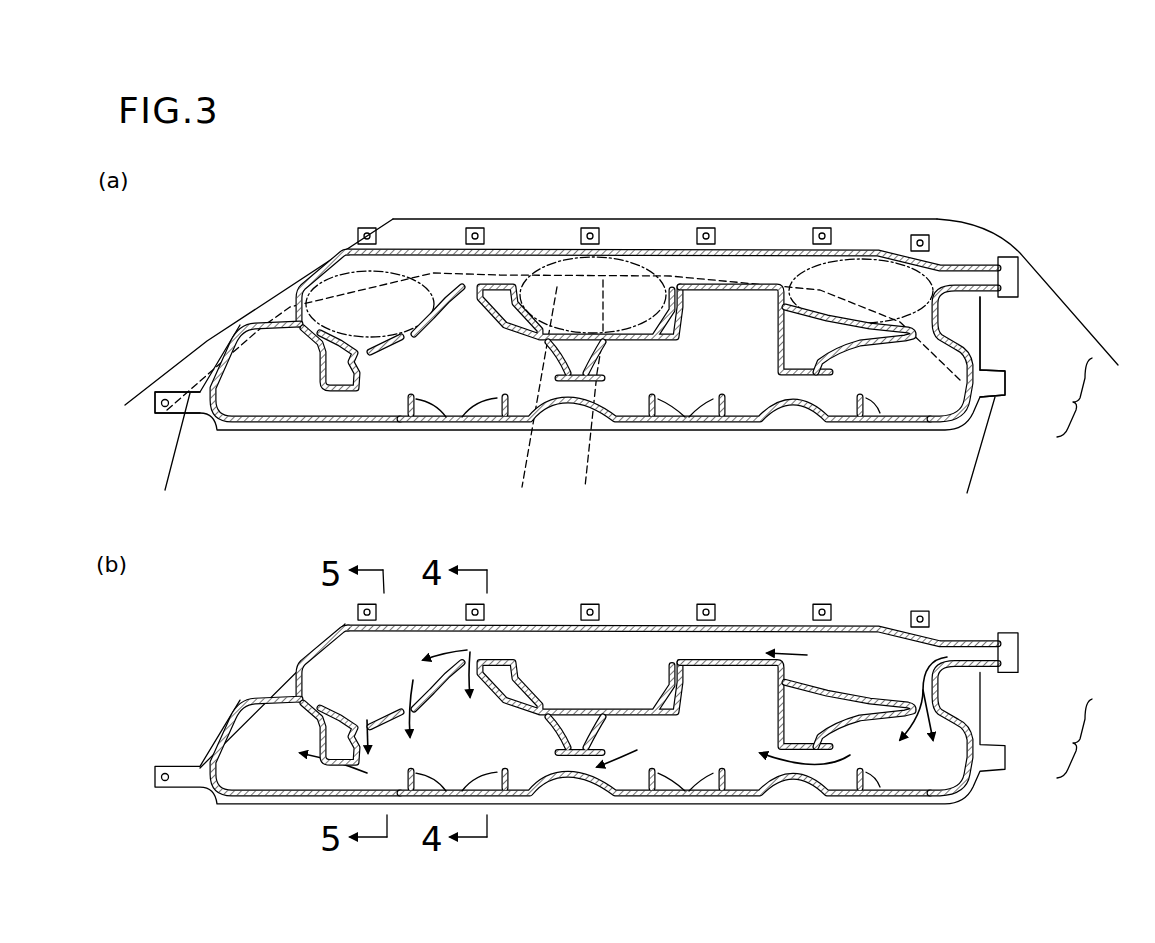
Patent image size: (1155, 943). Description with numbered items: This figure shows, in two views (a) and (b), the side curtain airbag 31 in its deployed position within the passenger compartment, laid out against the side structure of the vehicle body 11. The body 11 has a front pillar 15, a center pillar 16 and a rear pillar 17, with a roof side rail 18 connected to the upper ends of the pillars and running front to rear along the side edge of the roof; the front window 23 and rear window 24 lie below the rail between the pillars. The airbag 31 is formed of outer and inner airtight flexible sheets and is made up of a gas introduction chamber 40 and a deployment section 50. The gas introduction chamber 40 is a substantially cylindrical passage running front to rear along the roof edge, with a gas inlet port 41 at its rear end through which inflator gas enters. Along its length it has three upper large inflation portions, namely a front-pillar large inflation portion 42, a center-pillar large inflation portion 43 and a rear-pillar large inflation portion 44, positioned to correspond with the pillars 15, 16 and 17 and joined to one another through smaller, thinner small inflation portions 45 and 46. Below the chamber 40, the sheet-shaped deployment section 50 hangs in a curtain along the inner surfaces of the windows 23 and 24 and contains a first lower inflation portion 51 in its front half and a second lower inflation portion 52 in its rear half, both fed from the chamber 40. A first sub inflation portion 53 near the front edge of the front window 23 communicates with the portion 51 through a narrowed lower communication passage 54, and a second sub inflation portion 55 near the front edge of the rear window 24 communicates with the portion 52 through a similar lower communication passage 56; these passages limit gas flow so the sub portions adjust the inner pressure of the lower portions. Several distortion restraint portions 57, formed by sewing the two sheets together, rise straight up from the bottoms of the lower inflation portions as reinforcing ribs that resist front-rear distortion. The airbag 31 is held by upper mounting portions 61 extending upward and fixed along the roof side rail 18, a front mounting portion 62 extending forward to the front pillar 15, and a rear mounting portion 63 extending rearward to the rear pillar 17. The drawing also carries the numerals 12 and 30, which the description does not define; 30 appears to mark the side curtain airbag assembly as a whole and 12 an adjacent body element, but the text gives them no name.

The vehicle body 11 is at (175, 355).
The case 12 is at (298, 522).
The front pillar 15 is at (207, 337).
The center pillar 16 is at (537, 457).
The rear pillar 17 is at (1050, 308).
The roof side rail 18 is at (401, 228).
The front window 23 is at (345, 302).
The rear window 24 is at (617, 280).
The duct assembly 30 is at (263, 250).
The airbag 31 is at (1091, 568).
The gas introduction chamber 40 is at (992, 293).
The gas inlet port 41 is at (1012, 273).
The front-pillar large inflation portion 42 is at (423, 265).
The center-pillar large inflation portion 43 is at (650, 263).
The rear-pillar large inflation portion 44 is at (940, 268).
The small inflation portion 45 is at (503, 263).
The small inflation portion 46 is at (742, 263).
The deployment section 50 is at (963, 328).
The first lower inflation portion 51 is at (410, 373).
The second lower inflation portion 52 is at (903, 387).
The first sub inflation portion 53 is at (270, 390).
The lower communication passage 54 is at (340, 400).
The second sub inflation portion 55 is at (740, 363).
The lower communication passage 56 is at (797, 387).
The distortion restraint portion 57 is at (447, 416).
The upper mounting portion 61 is at (644, 394).
The front mounting portion 62 is at (168, 413).
The rear mounting portion 63 is at (996, 398).